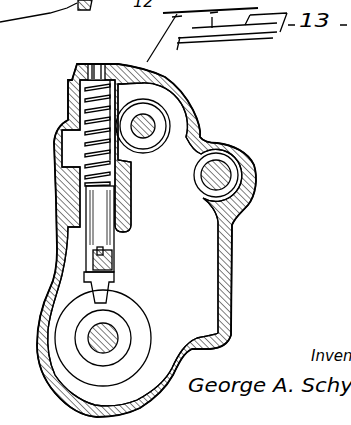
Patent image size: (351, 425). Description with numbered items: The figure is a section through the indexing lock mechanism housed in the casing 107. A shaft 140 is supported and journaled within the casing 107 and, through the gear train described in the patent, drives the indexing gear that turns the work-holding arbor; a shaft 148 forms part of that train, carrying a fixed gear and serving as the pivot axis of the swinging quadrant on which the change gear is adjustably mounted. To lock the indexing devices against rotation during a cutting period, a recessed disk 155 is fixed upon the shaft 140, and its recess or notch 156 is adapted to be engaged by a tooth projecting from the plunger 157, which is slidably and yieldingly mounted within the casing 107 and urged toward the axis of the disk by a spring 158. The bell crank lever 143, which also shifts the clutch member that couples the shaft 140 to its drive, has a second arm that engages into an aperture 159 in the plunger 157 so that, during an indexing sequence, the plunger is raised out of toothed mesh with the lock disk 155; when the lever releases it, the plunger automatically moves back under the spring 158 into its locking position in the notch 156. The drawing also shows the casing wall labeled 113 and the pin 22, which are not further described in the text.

The casing 107 is at (197, 107).
The casing wall 113 is at (233, 272).
The pin 22 is at (145, 139).
The shaft 148 is at (215, 190).
The recessed disk 155 is at (131, 289).
The shaft 140 is at (115, 337).
The spring 158 is at (82, 149).
The plunger 157 is at (114, 241).
The bell crank lever 143 is at (113, 267).
The aperture 159 is at (103, 252).
The recess or notch 156 is at (103, 304).